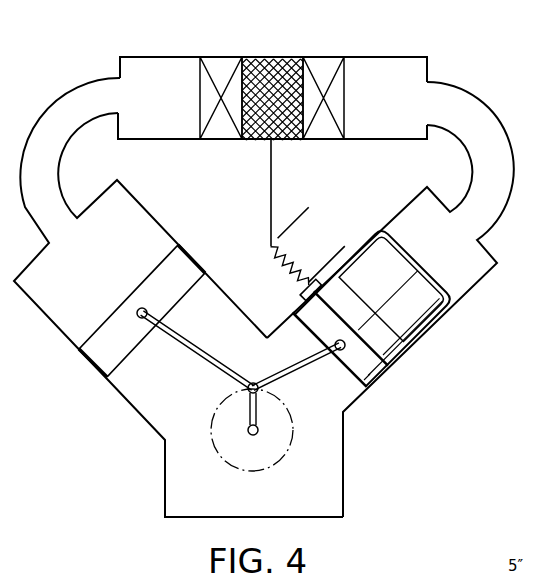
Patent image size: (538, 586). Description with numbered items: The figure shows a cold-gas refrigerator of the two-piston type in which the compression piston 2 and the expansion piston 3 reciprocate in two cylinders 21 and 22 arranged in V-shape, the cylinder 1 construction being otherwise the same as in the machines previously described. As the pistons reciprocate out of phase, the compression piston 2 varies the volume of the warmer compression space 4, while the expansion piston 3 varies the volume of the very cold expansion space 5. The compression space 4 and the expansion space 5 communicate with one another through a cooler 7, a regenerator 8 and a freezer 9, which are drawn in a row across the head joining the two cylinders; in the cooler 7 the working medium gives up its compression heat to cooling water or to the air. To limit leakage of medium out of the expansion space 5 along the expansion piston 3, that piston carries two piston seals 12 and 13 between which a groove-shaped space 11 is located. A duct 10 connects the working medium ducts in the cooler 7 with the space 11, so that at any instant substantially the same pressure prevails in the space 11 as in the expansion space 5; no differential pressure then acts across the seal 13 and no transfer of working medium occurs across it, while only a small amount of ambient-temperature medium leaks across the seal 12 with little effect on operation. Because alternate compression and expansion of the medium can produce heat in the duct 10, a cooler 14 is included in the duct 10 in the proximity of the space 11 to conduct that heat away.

The cylinder 1 is at (160, 56).
The cooler 7 is at (225, 62).
The regenerator 8 is at (270, 60).
The freezer 9 is at (324, 70).
The duct 10 is at (273, 171).
The cooler 14 is at (297, 248).
The compression space 4 is at (86, 268).
The expansion space 5 is at (438, 249).
The compression piston 2 is at (100, 350).
The expansion piston 3 is at (430, 322).
The cylinder 21 is at (127, 405).
The cylinder 22 is at (480, 282).
The space 11 is at (387, 373).
The piston seal 12 is at (403, 357).
The piston seal 13 is at (372, 393).